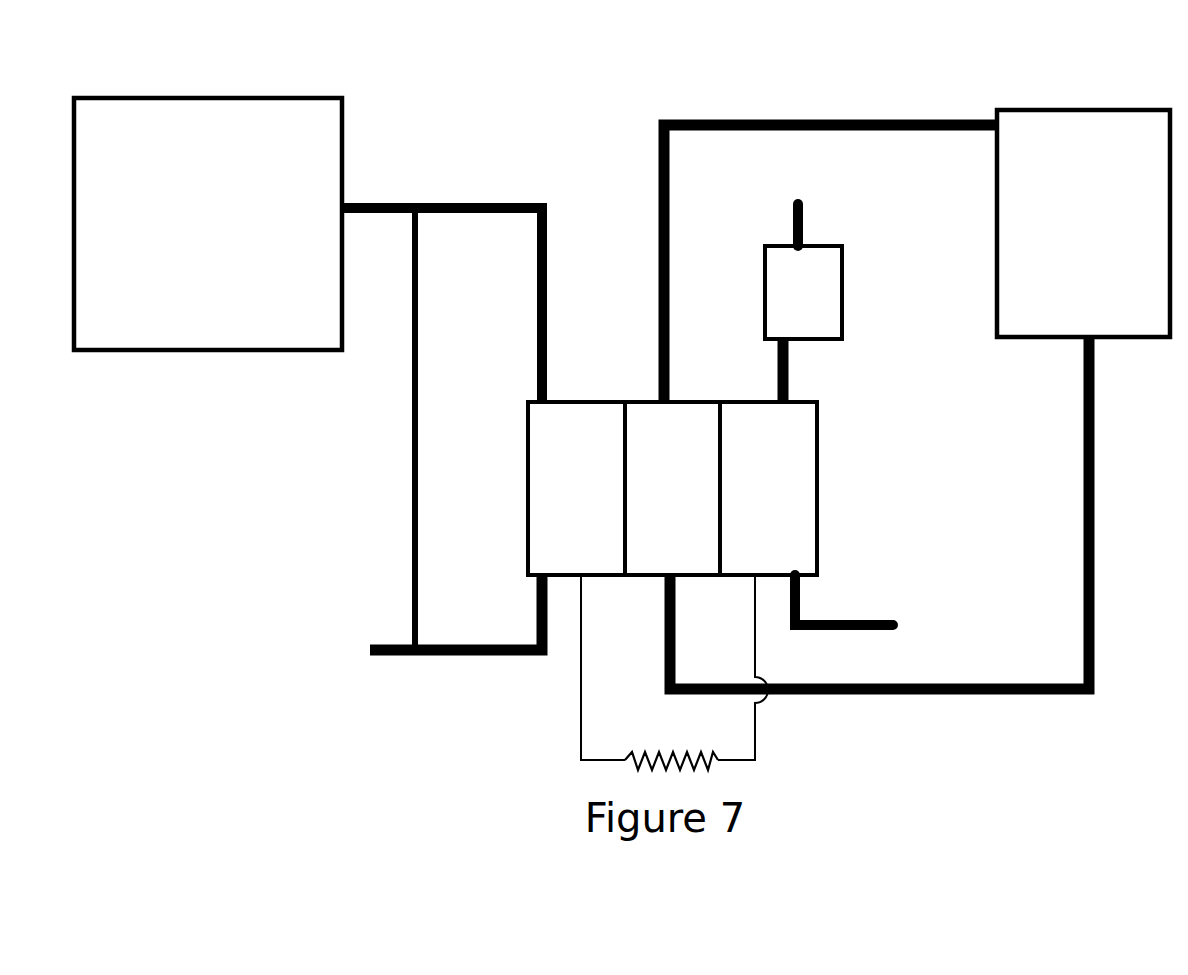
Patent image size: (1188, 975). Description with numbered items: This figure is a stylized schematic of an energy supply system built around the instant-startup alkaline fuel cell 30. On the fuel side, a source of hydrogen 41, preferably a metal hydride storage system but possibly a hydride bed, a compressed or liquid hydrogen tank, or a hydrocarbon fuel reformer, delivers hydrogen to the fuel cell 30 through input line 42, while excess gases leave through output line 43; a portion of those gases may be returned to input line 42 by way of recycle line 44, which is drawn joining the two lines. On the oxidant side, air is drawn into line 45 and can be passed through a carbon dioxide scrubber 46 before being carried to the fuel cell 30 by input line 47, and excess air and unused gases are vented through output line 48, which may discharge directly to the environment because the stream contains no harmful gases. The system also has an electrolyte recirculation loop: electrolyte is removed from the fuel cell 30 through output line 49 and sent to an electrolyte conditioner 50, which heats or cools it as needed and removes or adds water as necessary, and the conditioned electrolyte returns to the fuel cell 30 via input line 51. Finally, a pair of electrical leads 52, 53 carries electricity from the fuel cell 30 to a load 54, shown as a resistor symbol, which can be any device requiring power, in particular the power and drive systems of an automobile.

The alkaline fuel cell 30 is at (672, 488).
The source of hydrogen 41 is at (208, 224).
The input line 42 is at (488, 200).
The output line 43 is at (474, 640).
The recycle line 44 is at (418, 307).
The line 45 is at (808, 218).
The carbon dioxide scrubber 46 is at (803, 292).
The input line 47 is at (795, 372).
The output line 48 is at (880, 605).
The output line 49 is at (1007, 673).
The electrolyte conditioner 50 is at (1083, 223).
The input line 51 is at (817, 113).
The electrical lead 52 is at (578, 733).
The electrical lead 53 is at (758, 755).
The load 54 is at (671, 743).